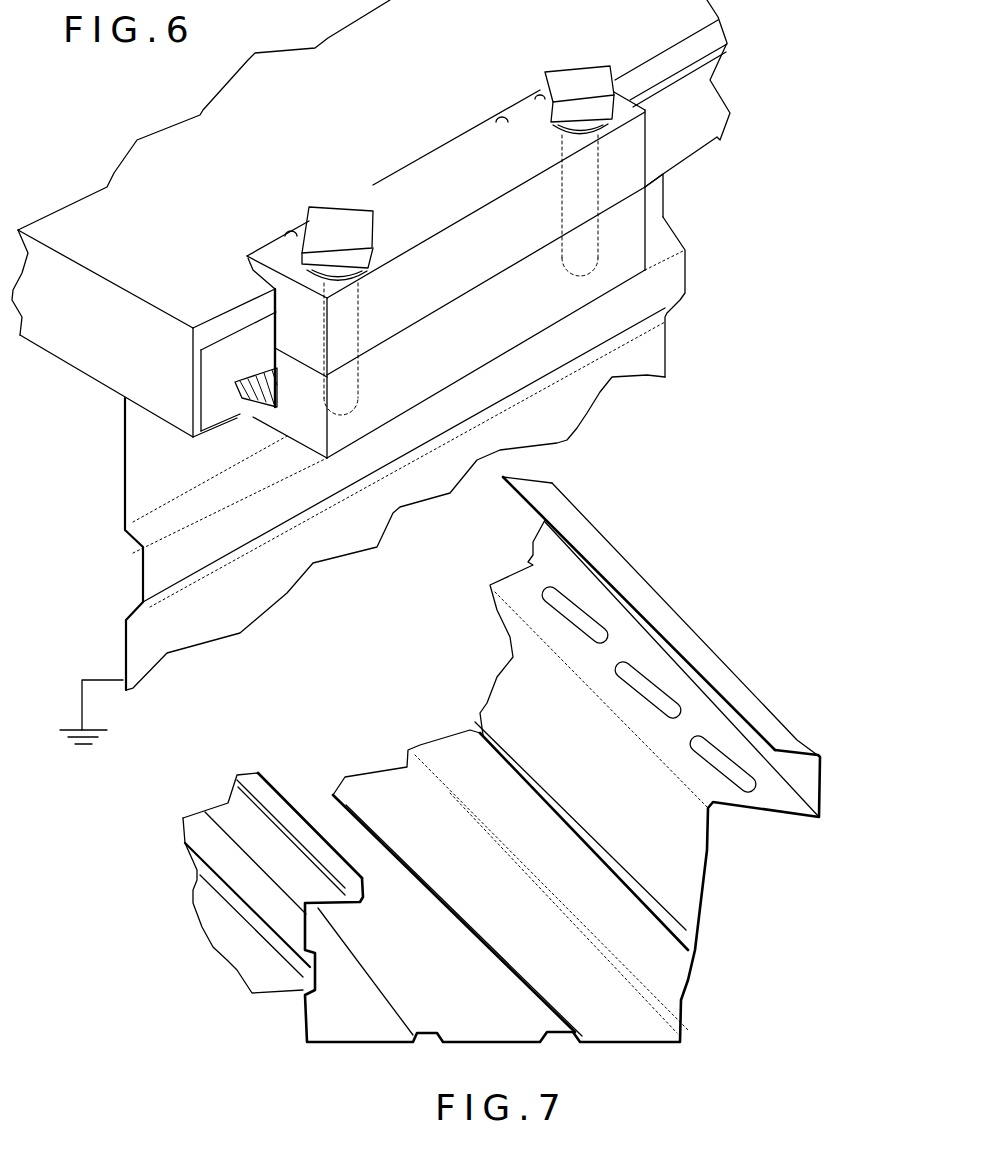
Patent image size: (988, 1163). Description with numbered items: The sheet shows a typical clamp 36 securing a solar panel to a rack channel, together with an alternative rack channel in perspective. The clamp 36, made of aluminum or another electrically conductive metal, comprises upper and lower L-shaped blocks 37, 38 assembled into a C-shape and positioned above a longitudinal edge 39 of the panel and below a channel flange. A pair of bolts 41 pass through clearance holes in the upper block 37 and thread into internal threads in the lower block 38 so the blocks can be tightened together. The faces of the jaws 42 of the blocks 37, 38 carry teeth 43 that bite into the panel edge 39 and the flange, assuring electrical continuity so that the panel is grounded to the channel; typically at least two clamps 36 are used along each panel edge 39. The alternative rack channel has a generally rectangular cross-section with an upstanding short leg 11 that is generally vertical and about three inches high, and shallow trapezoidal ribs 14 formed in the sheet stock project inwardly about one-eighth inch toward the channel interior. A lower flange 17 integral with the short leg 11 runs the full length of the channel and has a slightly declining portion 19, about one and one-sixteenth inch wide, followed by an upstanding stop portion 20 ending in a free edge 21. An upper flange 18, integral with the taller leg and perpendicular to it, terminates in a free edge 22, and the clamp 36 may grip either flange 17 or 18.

In FIG. 7, the short leg 11 is at (300, 960).
In FIG. 7, the ribs 14 is at (300, 923).
In FIG. 7, the lower flange 17 is at (303, 882).
In FIG. 7, the upper flange 18 is at (797, 740).
In FIG. 7, the declining portion 19 is at (252, 827).
In FIG. 7, the stop portion 20 is at (363, 890).
In FIG. 7, the free edge 21 is at (350, 867).
In FIG. 7, the free edge 22 is at (730, 723).
In FIG. 6, the clamp 36 is at (633, 249).
In FIG. 6, the upper block 37 is at (627, 157).
In FIG. 6, the lower block 38 is at (663, 212).
In FIG. 6, the longitudinal edge 39 is at (188, 310).
In FIG. 6, the bolts 41 is at (327, 218).
In FIG. 6, the jaws 42 is at (248, 258).
In FIG. 6, the teeth 43 is at (267, 286).